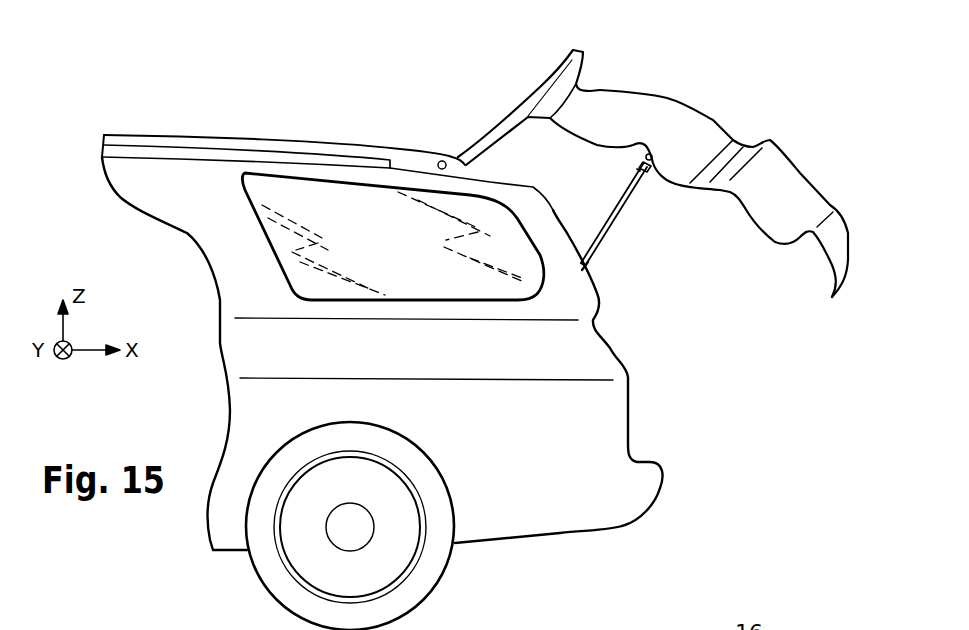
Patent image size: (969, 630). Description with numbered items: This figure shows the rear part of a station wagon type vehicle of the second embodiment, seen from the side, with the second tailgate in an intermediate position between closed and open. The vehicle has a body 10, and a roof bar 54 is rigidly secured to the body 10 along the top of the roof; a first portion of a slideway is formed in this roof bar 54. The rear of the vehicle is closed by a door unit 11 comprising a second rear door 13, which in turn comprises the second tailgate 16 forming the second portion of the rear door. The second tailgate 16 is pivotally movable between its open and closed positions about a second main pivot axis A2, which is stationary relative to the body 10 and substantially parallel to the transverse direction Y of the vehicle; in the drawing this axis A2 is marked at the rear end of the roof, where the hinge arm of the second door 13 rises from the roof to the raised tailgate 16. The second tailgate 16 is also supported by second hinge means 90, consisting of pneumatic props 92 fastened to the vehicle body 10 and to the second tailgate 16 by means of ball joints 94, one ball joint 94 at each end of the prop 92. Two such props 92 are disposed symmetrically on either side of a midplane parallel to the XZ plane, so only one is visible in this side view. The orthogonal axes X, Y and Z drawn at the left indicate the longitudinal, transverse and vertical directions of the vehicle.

The body 10 is at (183, 200).
The roof bar 54 is at (225, 136).
The second main pivot axis A2 is at (437, 163).
The second rear door 13 is at (648, 68).
The door unit 11 is at (797, 107).
The second tailgate 16 is at (695, 143).
The second hinge means 90 is at (655, 217).
The pneumatic props 92 is at (608, 230).
The ball joints 94 is at (650, 155).